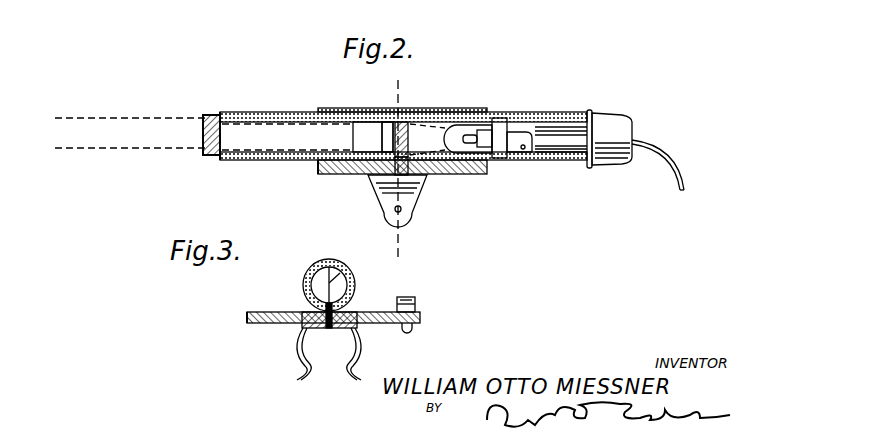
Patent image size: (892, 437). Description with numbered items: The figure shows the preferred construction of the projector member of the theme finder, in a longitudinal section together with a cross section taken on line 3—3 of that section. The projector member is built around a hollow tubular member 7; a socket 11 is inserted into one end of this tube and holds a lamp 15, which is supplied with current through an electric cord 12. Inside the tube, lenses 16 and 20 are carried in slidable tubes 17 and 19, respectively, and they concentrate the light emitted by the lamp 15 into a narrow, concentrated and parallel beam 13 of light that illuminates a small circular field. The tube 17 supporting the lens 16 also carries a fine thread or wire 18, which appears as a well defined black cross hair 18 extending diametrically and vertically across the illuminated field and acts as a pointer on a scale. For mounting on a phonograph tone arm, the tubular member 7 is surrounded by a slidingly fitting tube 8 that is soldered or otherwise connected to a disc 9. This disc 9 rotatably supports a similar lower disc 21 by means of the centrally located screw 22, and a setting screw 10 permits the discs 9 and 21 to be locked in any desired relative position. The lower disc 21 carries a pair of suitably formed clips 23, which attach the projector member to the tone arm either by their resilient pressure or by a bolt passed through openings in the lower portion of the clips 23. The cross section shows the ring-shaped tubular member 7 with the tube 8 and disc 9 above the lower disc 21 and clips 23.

In FIG. 2, the section line 3 is at (398, 173).
In FIG. 2, the hollow tubular member 7 is at (530, 110).
In FIG. 3, the hollow tubular member 7 is at (305, 290).
In FIG. 3, the slidingly fitting tube 8 is at (322, 262).
In FIG. 2, the disc 9 is at (318, 165).
In FIG. 3, the disc 9 is at (258, 312).
In FIG. 3, the setting screw 10 is at (418, 300).
In FIG. 2, the socket 11 is at (614, 122).
In FIG. 2, the electric cord 12 is at (688, 177).
In FIG. 2, the beam of light 13 is at (203, 134).
In FIG. 2, the lamp 15 is at (487, 160).
In FIG. 2, the lens 16 is at (415, 112).
In FIG. 2, the slidable tube 17 is at (375, 110).
In FIG. 2, the cross hair 18 is at (372, 157).
In FIG. 3, the cross hair 18 is at (349, 270).
In FIG. 2, the slidable tube 19 is at (222, 115).
In FIG. 2, the lens 20 is at (207, 115).
In FIG. 2, the lower disc 21 is at (328, 170).
In FIG. 3, the lower disc 21 is at (250, 322).
In FIG. 2, the screw 22 is at (405, 178).
In FIG. 3, the screw 22 is at (329, 330).
In FIG. 2, the clips 23 is at (410, 215).
In FIG. 3, the clips 23 is at (350, 382).